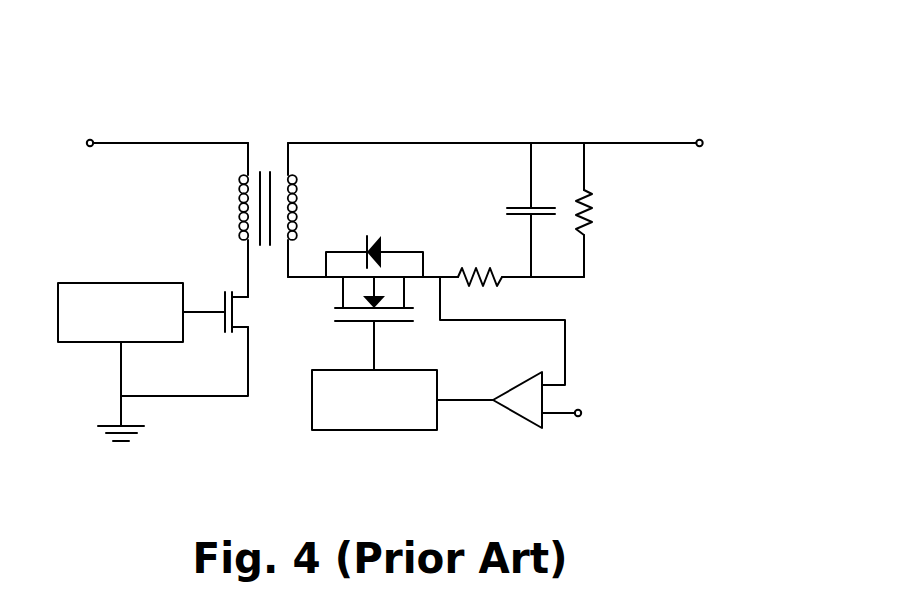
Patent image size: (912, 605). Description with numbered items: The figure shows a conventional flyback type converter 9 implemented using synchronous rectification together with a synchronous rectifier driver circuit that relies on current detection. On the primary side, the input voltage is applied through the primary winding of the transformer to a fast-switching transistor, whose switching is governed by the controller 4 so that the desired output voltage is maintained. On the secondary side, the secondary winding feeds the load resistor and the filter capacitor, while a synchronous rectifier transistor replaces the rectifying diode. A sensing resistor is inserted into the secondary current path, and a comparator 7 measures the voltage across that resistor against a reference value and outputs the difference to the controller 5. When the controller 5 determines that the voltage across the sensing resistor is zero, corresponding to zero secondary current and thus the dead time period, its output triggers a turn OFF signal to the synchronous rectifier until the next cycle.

The controller 4 is at (120, 283).
The controller 5 is at (374, 430).
The comparator 7 is at (520, 416).
The flyback type converter 9 is at (580, 39).